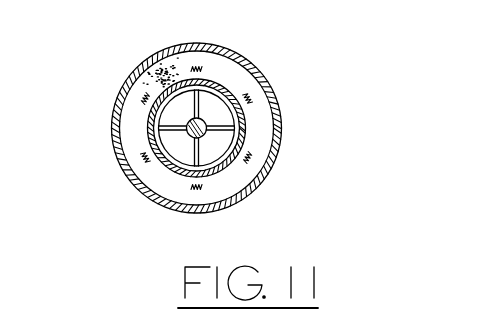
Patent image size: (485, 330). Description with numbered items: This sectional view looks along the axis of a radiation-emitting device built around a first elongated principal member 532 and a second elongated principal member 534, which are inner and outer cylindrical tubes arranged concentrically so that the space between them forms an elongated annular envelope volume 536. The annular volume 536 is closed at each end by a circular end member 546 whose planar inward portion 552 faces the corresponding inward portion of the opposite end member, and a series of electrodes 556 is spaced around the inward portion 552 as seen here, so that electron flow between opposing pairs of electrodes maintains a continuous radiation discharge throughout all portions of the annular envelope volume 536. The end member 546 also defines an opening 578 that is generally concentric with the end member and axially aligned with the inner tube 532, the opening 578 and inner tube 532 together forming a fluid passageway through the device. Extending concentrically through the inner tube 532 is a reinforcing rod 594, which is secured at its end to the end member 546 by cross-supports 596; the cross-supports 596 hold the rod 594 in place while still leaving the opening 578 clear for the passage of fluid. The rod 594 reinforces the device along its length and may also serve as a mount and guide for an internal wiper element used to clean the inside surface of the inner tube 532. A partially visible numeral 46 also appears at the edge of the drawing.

The first elongated principal member 532 is at (145, 143).
The second elongated principal member 534 is at (278, 155).
The annular envelope volume 536 is at (158, 87).
The end member 546 is at (277, 95).
The inward portion 552 is at (225, 180).
The electrodes 556 is at (200, 68).
The opening 578 is at (180, 112).
The reinforcing rod 594 is at (193, 136).
The cross-supports 596 is at (200, 148).
The partially visible numeral 46 is at (15, 81).